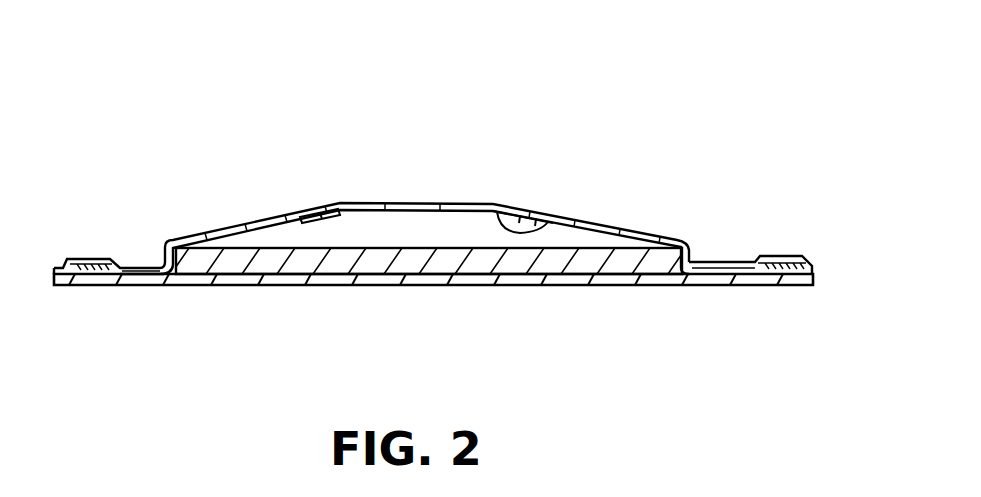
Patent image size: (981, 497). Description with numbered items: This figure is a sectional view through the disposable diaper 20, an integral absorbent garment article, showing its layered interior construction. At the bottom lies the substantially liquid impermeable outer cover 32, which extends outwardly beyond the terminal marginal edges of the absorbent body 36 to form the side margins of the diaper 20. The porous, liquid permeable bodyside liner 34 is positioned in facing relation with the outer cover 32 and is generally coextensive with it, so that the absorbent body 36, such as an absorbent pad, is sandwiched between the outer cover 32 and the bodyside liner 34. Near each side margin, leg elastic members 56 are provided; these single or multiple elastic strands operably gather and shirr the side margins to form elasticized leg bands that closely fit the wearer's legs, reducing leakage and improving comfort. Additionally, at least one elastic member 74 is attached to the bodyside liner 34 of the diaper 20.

The disposable diaper 20 is at (110, 78).
The outer cover 32 is at (765, 286).
The bodyside liner 34 is at (722, 263).
The absorbent body 36 is at (612, 246).
The leg elastic members 56 is at (790, 258).
The elastic member 74 is at (533, 221).